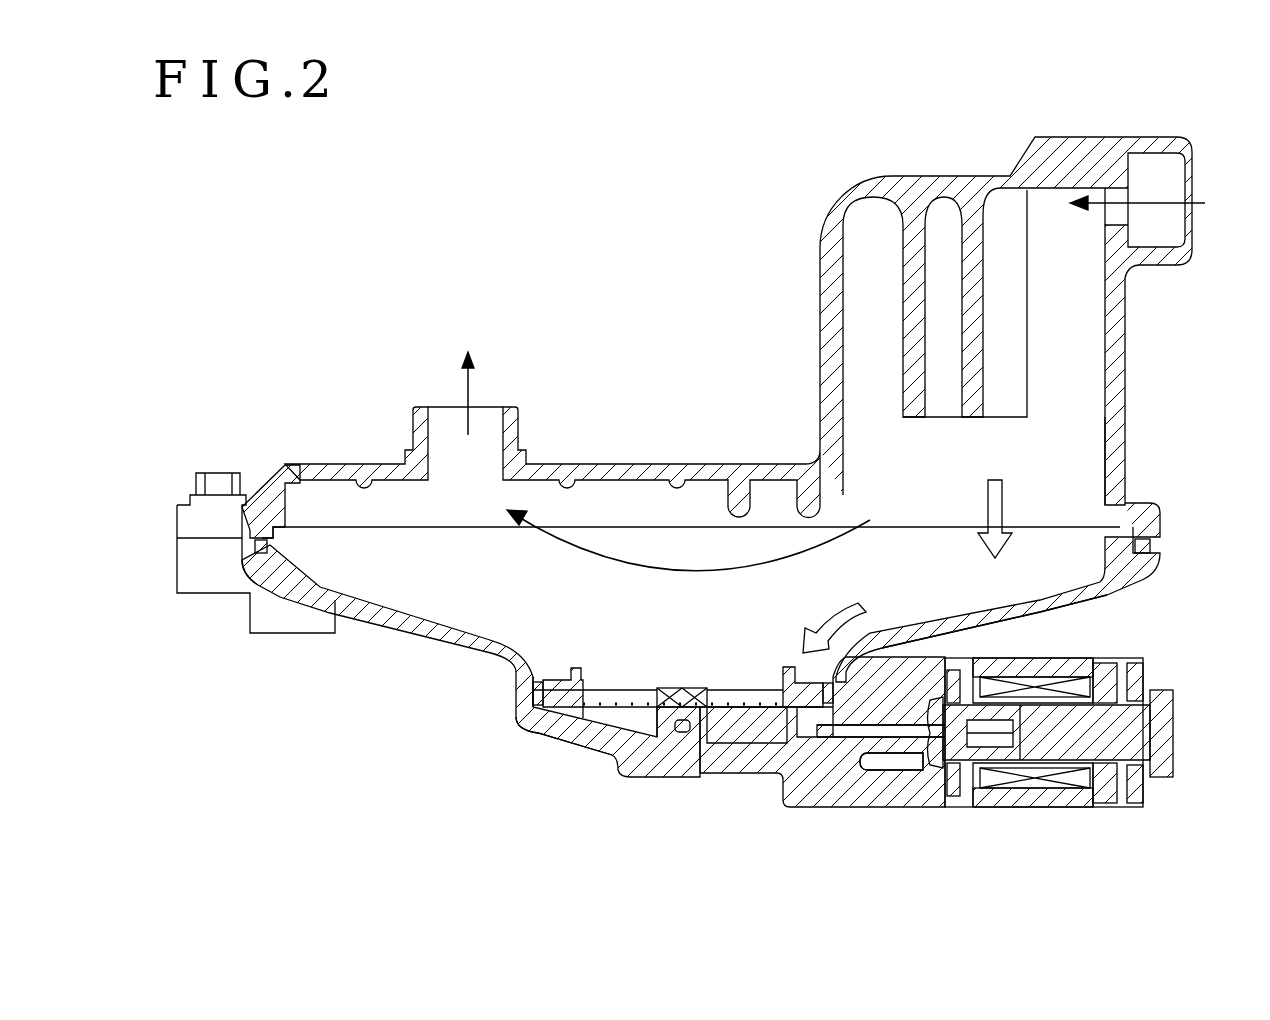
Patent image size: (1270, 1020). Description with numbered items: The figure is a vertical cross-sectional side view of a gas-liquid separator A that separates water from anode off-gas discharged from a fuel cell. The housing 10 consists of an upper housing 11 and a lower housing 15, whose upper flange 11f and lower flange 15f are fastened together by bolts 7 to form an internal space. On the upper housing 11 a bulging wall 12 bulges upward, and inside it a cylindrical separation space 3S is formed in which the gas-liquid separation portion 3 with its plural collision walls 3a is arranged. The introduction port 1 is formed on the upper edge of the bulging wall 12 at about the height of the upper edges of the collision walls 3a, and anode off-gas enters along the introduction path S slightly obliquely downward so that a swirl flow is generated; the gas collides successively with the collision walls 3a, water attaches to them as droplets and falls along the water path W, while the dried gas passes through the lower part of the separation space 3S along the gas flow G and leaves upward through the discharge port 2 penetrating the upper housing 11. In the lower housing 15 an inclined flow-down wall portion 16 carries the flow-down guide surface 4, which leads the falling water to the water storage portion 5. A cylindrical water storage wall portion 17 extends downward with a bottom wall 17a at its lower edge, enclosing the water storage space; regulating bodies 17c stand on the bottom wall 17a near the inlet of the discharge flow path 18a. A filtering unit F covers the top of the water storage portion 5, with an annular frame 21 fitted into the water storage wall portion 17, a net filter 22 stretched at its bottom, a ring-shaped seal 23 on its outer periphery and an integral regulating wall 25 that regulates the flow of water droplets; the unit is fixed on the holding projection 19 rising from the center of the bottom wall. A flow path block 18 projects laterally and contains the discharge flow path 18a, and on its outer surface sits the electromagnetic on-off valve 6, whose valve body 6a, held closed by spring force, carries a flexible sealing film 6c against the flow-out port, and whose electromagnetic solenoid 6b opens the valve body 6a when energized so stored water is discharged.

The introduction port 1 is at (1110, 190).
The discharge port 2 is at (440, 405).
The gas-liquid separation portion 3 is at (1068, 466).
The collision walls 3a is at (980, 340).
The separation space 3S is at (1085, 405).
The flow-down guide surface 4 is at (960, 605).
The water storage portion 5 is at (640, 705).
The electromagnetic on-off valve 6 is at (1095, 823).
The valve body 6a is at (948, 798).
The electromagnetic solenoid 6b is at (1035, 787).
The sealing film 6c is at (915, 760).
The bolts 7 is at (210, 472).
The housing 10 is at (245, 438).
The upper housing 11 is at (645, 462).
The upper flange 11f is at (1165, 518).
The bulging wall 12 is at (820, 352).
The lower housing 15 is at (418, 655).
The lower flange 15f is at (1165, 556).
The flow-down wall portion 16 is at (1010, 615).
The water storage wall portion 17 is at (540, 670).
The bottom wall 17a is at (570, 730).
The regulating bodies 17c is at (860, 765).
The flow path block 18 is at (870, 808).
The discharge flow path 18a is at (840, 740).
The holding projection 19 is at (730, 745).
The annular frame 21 is at (600, 672).
The filter 22 is at (760, 720).
The ring-shaped seal 23 is at (532, 690).
The regulating wall 25 is at (790, 670).
The gas-liquid separator A is at (695, 255).
The introduction path S is at (1158, 196).
The gas flow G is at (470, 400).
The water path W is at (1010, 505).
The filtering unit F is at (733, 685).